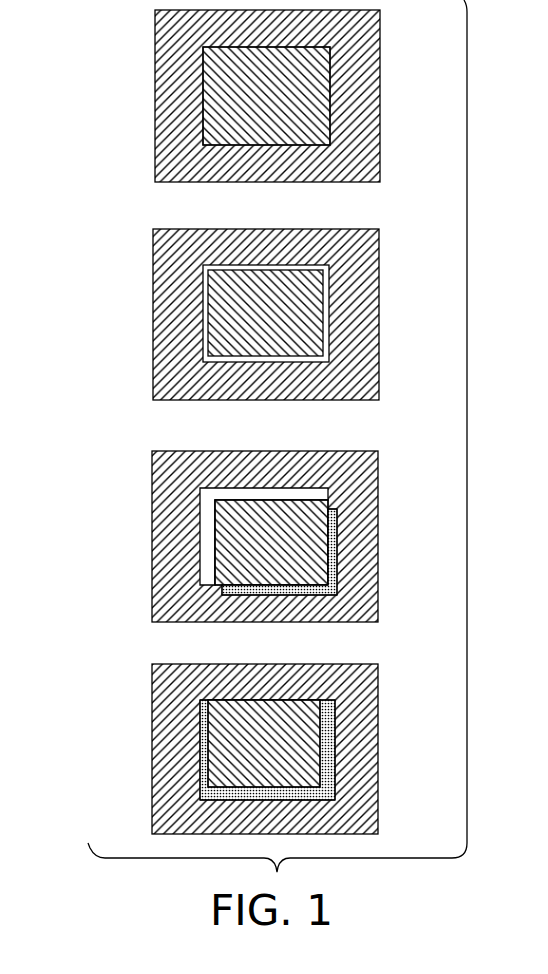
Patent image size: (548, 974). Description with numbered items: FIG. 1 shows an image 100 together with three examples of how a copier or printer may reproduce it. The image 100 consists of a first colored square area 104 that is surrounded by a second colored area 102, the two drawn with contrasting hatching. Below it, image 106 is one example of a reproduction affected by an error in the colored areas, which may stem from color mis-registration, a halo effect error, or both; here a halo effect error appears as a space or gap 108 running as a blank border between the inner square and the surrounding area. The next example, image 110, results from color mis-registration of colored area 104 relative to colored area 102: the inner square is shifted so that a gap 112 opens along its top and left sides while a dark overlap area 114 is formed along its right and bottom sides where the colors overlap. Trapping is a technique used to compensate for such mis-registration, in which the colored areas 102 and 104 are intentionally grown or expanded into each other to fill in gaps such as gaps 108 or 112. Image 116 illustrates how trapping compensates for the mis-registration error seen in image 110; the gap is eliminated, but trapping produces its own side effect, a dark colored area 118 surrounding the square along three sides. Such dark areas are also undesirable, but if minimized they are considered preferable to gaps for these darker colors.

The image 100 is at (137, 87).
The second colored area 102 is at (381, 40).
The first colored square area 104 is at (312, 105).
The image 106 is at (134, 305).
The gap 108 is at (312, 325).
The image 110 is at (134, 529).
The gap 112 is at (273, 500).
The dark overlap area 114 is at (337, 553).
The image 116 is at (134, 741).
The dark colored area 118 is at (327, 762).